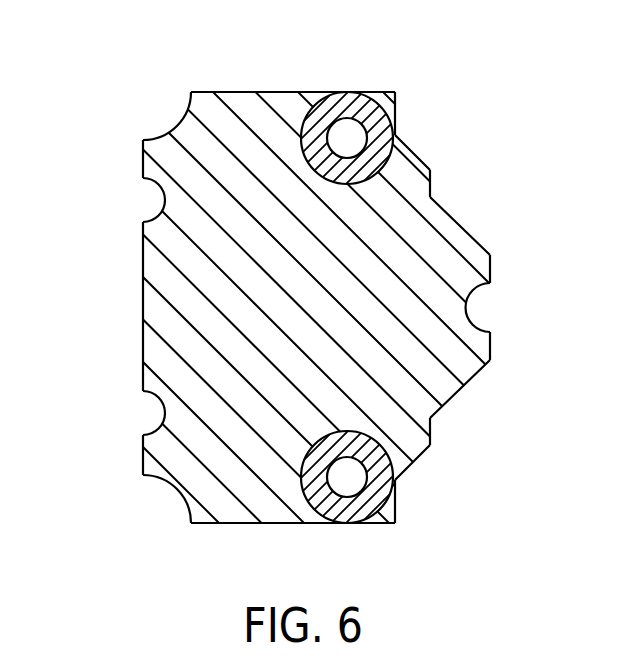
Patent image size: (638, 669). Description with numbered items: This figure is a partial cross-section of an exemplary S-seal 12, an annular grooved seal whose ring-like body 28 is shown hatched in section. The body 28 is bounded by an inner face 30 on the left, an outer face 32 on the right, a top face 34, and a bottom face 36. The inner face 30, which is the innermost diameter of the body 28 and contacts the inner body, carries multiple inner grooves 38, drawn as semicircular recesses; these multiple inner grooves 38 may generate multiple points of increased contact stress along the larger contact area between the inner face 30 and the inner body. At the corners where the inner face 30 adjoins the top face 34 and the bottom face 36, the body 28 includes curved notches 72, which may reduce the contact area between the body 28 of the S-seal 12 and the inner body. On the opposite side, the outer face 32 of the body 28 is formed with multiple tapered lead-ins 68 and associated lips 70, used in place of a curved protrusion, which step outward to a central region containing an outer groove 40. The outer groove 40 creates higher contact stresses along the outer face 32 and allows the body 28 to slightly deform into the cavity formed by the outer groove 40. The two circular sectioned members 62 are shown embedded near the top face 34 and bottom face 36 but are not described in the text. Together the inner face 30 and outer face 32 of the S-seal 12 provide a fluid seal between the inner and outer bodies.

The S-seal 12 is at (422, 50).
The body 28 is at (201, 72).
The inner face 30 is at (143, 303).
The outer face 32 is at (492, 265).
The top face 34 is at (262, 92).
The bottom face 36 is at (233, 523).
The inner grooves 38 is at (140, 198).
The outer groove 40 is at (483, 305).
The fastener 62 is at (343, 105).
The tapered lead-ins 68 is at (412, 150).
The lips 70 is at (396, 107).
The curved notches 72 is at (158, 110).